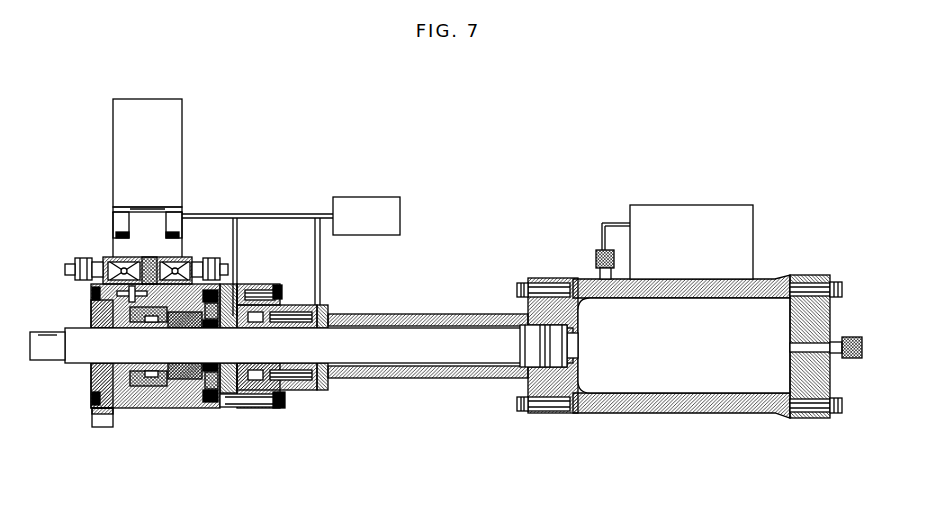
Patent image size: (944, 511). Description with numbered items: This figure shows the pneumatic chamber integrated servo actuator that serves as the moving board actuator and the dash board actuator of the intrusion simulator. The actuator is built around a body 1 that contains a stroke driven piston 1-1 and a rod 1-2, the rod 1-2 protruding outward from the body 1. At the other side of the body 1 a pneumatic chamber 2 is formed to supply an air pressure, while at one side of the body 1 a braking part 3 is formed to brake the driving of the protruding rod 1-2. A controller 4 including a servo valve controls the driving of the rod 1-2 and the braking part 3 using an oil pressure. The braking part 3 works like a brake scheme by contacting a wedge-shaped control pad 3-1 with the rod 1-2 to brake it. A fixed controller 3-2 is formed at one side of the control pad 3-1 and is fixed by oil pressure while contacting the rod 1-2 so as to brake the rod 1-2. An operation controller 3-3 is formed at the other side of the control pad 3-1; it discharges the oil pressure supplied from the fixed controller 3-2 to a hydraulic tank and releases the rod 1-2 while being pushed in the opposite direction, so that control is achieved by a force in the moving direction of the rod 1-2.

The body 1 is at (366, 196).
The stroke driven piston 1-1 is at (528, 362).
The rod 1-2 is at (432, 357).
The pneumatic chamber 2 is at (770, 278).
The braking part 3 is at (191, 362).
The wedge-shaped control pad 3-1 is at (182, 397).
The fixed controller 3-2 is at (212, 405).
The operation controller 3-3 is at (92, 385).
The controller 4 is at (116, 146).